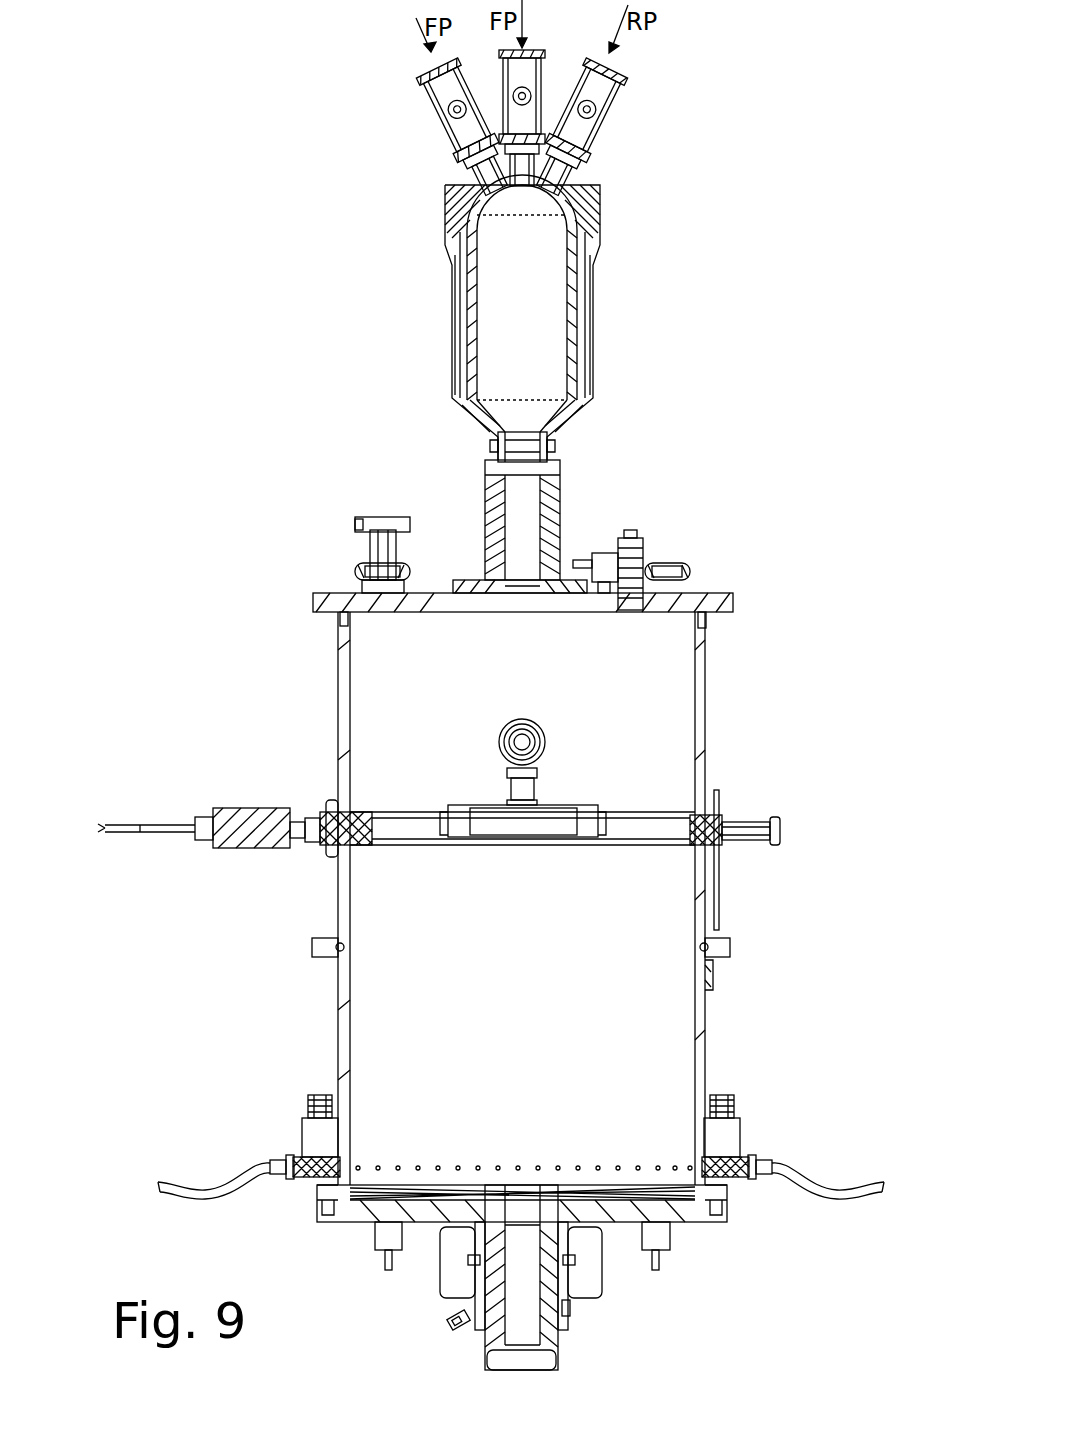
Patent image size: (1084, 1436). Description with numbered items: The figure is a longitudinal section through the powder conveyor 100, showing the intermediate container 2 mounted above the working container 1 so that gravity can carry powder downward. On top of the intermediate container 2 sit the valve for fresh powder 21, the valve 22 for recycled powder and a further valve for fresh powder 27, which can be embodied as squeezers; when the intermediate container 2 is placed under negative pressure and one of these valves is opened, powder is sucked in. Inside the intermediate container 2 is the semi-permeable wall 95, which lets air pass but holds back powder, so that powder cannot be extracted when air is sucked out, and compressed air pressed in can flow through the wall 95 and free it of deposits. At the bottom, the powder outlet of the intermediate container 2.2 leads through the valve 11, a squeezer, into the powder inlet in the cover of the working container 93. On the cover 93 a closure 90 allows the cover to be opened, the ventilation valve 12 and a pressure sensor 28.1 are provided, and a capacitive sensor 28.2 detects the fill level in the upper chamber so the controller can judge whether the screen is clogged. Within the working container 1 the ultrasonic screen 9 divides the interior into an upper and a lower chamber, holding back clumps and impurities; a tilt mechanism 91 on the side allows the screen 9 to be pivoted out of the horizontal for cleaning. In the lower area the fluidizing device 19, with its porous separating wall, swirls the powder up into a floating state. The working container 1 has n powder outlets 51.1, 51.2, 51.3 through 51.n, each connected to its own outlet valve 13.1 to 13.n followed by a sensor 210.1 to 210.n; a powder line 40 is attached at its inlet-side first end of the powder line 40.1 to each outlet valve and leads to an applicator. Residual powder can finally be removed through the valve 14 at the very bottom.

The working container 1 is at (305, 703).
The intermediate container 2 is at (432, 316).
The powder outlet of the intermediate container 2.2 is at (528, 445).
The ultrasonic screen 9 is at (385, 805).
The valve 11 is at (487, 514).
The ventilation valve 12 is at (600, 554).
The outlet valve 13.1 is at (730, 1103).
The outlet valve 13.n is at (310, 1103).
The valve 14 is at (560, 1340).
The fluidizing device 19 is at (368, 1208).
The valve for fresh powder 21 is at (430, 105).
The valve 22 is at (612, 98).
The valve for fresh powder 27 is at (540, 72).
The pressure sensor 28.1 is at (376, 518).
The sensor 28.2 is at (636, 546).
The powder line 40 is at (168, 1183).
The first end of the powder line 40.1 is at (272, 1165).
The powder outlet 51.1 is at (692, 1167).
The powder outlet 51.2 is at (689, 1168).
The powder outlet 51.3 is at (686, 1168).
The powder outlet 51.n is at (352, 1167).
The closure 90 is at (357, 575).
The tilt mechanism 91 is at (780, 824).
The cover of the working container 93 is at (736, 604).
The semi-permeable wall 95 is at (468, 366).
The powder conveyor 100 is at (485, 818).
The sensor 210.1 is at (747, 1158).
The sensor 210.n is at (290, 1181).